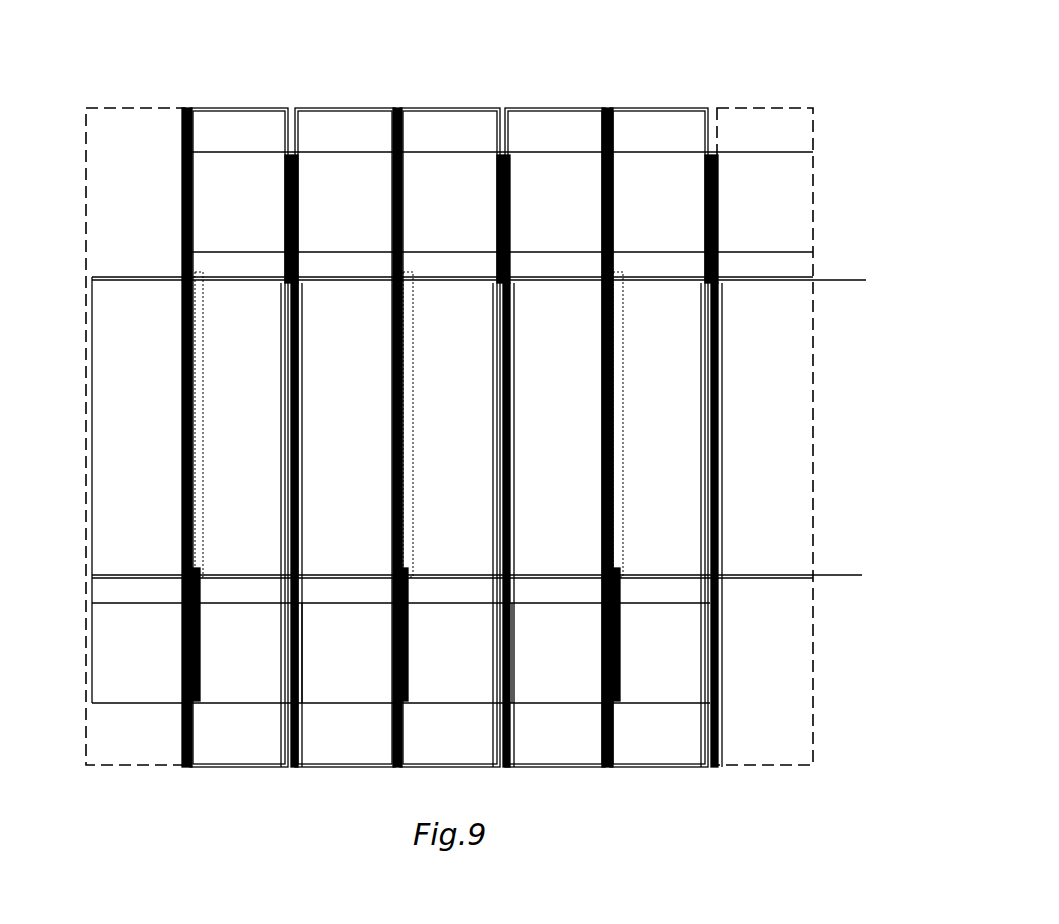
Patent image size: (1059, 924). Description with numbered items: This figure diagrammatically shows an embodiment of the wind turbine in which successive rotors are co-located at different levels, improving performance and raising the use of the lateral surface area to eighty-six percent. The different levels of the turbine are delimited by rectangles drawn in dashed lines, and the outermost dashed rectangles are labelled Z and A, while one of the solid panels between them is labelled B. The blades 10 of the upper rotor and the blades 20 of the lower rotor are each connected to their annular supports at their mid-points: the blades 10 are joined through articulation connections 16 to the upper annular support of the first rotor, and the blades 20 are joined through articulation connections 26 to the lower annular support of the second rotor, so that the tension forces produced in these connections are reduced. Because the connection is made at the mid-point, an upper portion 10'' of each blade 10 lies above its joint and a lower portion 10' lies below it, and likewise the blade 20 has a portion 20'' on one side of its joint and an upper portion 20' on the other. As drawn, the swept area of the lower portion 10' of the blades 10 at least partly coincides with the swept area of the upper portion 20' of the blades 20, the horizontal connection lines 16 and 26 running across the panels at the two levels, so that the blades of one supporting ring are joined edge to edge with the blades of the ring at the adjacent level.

The blade 10 is at (645, 696).
The lower portion of blade 10' is at (745, 653).
The upper portion of blade 10'' is at (557, 718).
The articulation connection 16 is at (491, 572).
The blade 20 is at (743, 159).
The upper portion of blade 20' is at (807, 214).
The upper portion of blade 20'' is at (659, 156).
The articulation connection 26 is at (495, 282).
The panel A is at (763, 767).
The panel B is at (624, 767).
The panel Z is at (103, 768).